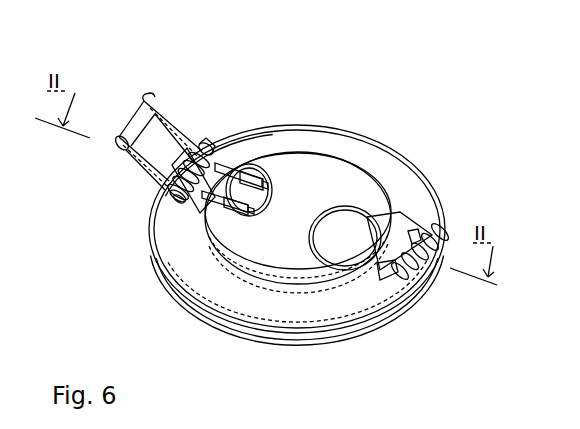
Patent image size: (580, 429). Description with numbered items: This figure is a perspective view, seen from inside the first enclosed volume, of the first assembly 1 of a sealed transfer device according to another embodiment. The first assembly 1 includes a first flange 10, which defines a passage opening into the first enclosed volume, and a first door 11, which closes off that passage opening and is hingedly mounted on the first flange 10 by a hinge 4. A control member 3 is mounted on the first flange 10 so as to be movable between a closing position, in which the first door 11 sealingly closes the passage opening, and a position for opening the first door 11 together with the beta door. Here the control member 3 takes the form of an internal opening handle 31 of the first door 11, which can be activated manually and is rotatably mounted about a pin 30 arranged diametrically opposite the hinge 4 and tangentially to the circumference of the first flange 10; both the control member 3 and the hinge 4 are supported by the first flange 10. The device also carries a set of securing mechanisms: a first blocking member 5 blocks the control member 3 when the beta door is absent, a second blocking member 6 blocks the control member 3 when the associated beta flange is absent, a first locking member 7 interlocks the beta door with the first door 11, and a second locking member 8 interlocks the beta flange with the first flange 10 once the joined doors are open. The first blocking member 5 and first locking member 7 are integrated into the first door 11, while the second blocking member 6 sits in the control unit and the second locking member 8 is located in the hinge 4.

The first assembly 1 is at (413, 52).
The control member 3 is at (203, 120).
The hinge 4 is at (439, 290).
The first blocking member 5 is at (211, 220).
The second blocking member 6 is at (178, 210).
The first locking member 7 is at (264, 165).
The second locking member 8 is at (387, 289).
The first flange 10 is at (355, 150).
The first door 11 is at (355, 185).
The pin 30 is at (218, 132).
The internal opening handle 31 is at (119, 164).